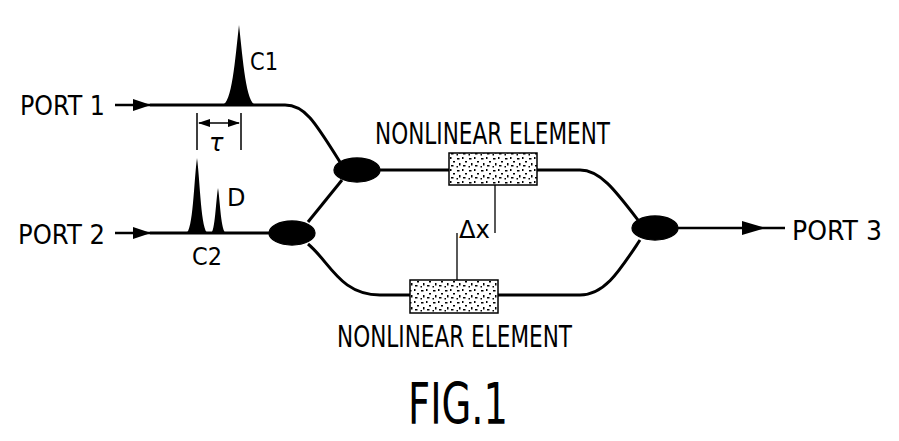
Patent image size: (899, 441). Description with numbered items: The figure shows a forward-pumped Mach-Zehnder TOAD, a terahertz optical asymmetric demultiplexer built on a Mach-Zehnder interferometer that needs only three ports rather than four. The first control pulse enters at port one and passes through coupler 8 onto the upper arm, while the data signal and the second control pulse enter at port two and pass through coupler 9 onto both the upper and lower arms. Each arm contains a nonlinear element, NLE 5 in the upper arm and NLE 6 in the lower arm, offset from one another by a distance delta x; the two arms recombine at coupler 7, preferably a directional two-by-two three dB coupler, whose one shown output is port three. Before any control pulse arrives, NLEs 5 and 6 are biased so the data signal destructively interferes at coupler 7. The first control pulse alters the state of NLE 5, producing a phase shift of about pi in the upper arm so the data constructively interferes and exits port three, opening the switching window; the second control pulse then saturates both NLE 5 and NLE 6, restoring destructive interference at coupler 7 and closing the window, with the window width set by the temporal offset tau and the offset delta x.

The nonlinear element 5 is at (517, 185).
The nonlinear element 6 is at (498, 287).
The coupler 7 is at (661, 240).
The coupler 8 is at (368, 181).
The coupler 9 is at (283, 245).